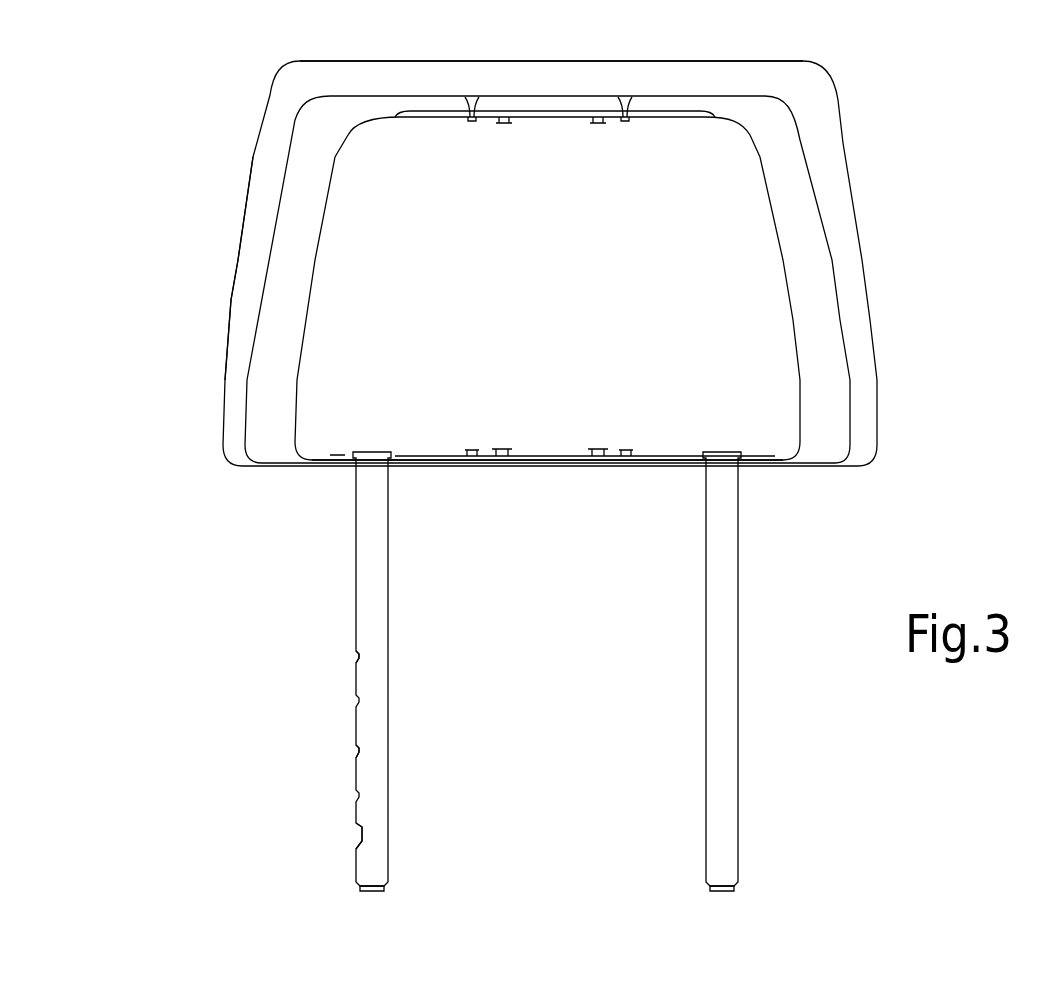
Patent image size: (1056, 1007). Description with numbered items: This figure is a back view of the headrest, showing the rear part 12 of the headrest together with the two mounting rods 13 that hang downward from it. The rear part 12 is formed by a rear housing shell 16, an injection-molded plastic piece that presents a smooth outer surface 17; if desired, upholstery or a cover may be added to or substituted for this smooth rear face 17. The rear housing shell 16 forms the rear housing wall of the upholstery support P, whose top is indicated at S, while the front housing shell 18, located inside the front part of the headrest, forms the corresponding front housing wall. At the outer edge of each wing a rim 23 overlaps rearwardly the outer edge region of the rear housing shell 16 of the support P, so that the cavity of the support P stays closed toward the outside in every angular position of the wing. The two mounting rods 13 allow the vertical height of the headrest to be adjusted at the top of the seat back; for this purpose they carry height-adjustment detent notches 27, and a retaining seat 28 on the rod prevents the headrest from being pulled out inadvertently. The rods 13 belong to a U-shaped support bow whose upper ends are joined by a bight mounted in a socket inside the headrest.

The top of the support S is at (573, 76).
The upholstery support P is at (220, 277).
The front housing shell 18 is at (845, 142).
The rim 23 is at (250, 156).
The rear housing shell 16 is at (800, 302).
The smooth outer surface 17 is at (332, 414).
The rear part 12 is at (551, 470).
The mounting rods 13 is at (353, 543).
The height-adjustment detent notches 27 is at (352, 659).
The retaining seat 28 is at (352, 831).